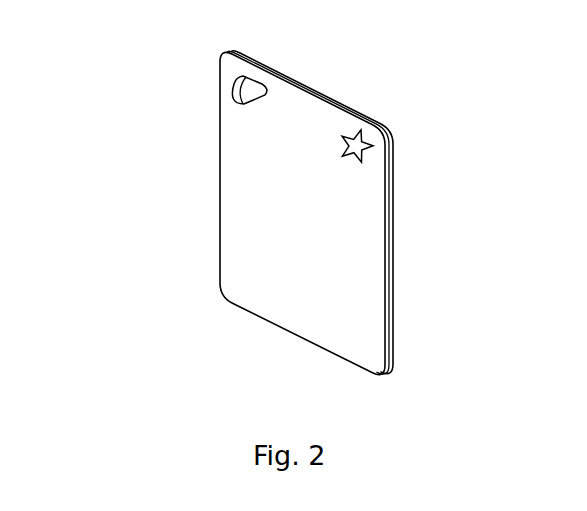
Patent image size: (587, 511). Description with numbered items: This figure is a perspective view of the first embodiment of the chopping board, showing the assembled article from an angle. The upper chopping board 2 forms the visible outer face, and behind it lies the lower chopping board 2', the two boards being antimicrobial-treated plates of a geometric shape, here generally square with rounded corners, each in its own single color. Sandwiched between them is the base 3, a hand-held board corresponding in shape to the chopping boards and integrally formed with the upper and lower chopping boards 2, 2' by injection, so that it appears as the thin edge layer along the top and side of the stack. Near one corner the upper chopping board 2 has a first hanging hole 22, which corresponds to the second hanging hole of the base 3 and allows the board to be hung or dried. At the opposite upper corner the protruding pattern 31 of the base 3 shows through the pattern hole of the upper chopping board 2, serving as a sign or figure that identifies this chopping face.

The upper chopping board 2 is at (302, 213).
The lower chopping board 2' is at (346, 212).
The base 3 is at (390, 277).
The first hanging hole 22 is at (243, 87).
The protruding pattern 31 is at (500, 109).